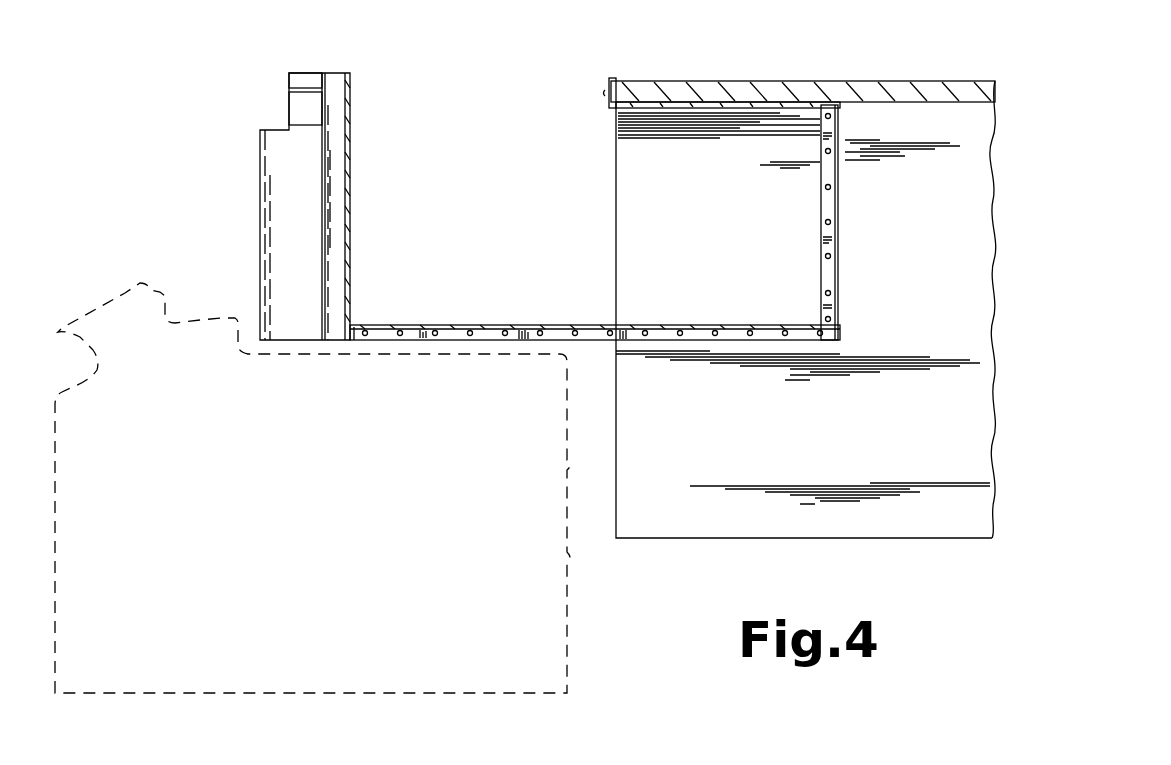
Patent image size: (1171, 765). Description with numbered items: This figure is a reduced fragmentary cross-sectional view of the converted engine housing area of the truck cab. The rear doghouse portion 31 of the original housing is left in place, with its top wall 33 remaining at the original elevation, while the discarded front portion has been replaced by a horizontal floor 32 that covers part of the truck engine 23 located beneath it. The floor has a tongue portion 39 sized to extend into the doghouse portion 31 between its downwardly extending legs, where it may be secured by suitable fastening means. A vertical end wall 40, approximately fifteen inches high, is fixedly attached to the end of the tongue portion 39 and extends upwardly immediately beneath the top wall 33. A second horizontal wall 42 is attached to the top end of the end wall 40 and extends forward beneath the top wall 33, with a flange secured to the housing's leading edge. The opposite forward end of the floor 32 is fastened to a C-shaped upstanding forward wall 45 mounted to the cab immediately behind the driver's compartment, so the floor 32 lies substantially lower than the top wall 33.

The truck engine 23 is at (567, 633).
The doghouse portion 31 is at (1005, 218).
The horizontal floor 32 is at (412, 325).
The top wall 33 is at (868, 81).
The tongue portion 39 is at (556, 325).
The vertical end wall 40 is at (838, 250).
The second horizontal wall 42 is at (650, 109).
The forward wall 45 is at (350, 150).